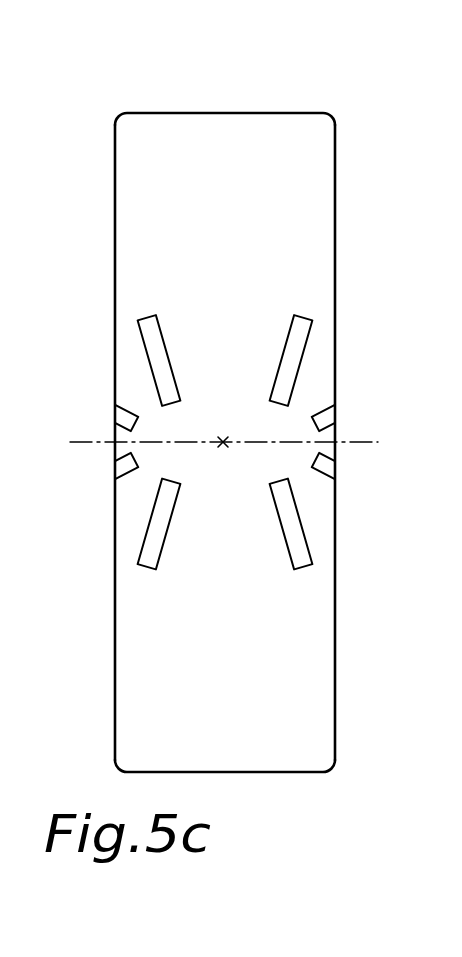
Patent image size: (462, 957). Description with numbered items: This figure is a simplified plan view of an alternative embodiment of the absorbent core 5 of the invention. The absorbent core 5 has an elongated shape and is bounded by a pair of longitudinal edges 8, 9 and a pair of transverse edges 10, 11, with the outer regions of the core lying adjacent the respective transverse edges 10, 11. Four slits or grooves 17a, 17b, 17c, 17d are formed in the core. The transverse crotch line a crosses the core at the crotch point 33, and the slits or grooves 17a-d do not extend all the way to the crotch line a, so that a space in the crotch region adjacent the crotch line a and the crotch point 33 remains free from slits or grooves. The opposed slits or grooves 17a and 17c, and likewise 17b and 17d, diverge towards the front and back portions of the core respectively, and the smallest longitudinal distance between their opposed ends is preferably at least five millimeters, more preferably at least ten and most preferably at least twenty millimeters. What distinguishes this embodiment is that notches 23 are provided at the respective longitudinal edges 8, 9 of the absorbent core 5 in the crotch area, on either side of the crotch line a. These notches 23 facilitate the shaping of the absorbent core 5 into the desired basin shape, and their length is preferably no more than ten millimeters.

The absorbent core 5 is at (377, 160).
The longitudinal edge 8 is at (335, 377).
The longitudinal edge 9 is at (115, 295).
The transverse edge 10 is at (272, 772).
The transverse edge 11 is at (231, 113).
The slit or groove 17a is at (150, 532).
The slit or groove 17b is at (302, 523).
The slit or groove 17c is at (156, 350).
The slit or groove 17d is at (302, 340).
The notch 23 is at (123, 415).
The crotch point 33 is at (223, 440).
The transverse crotch line a is at (78, 443).